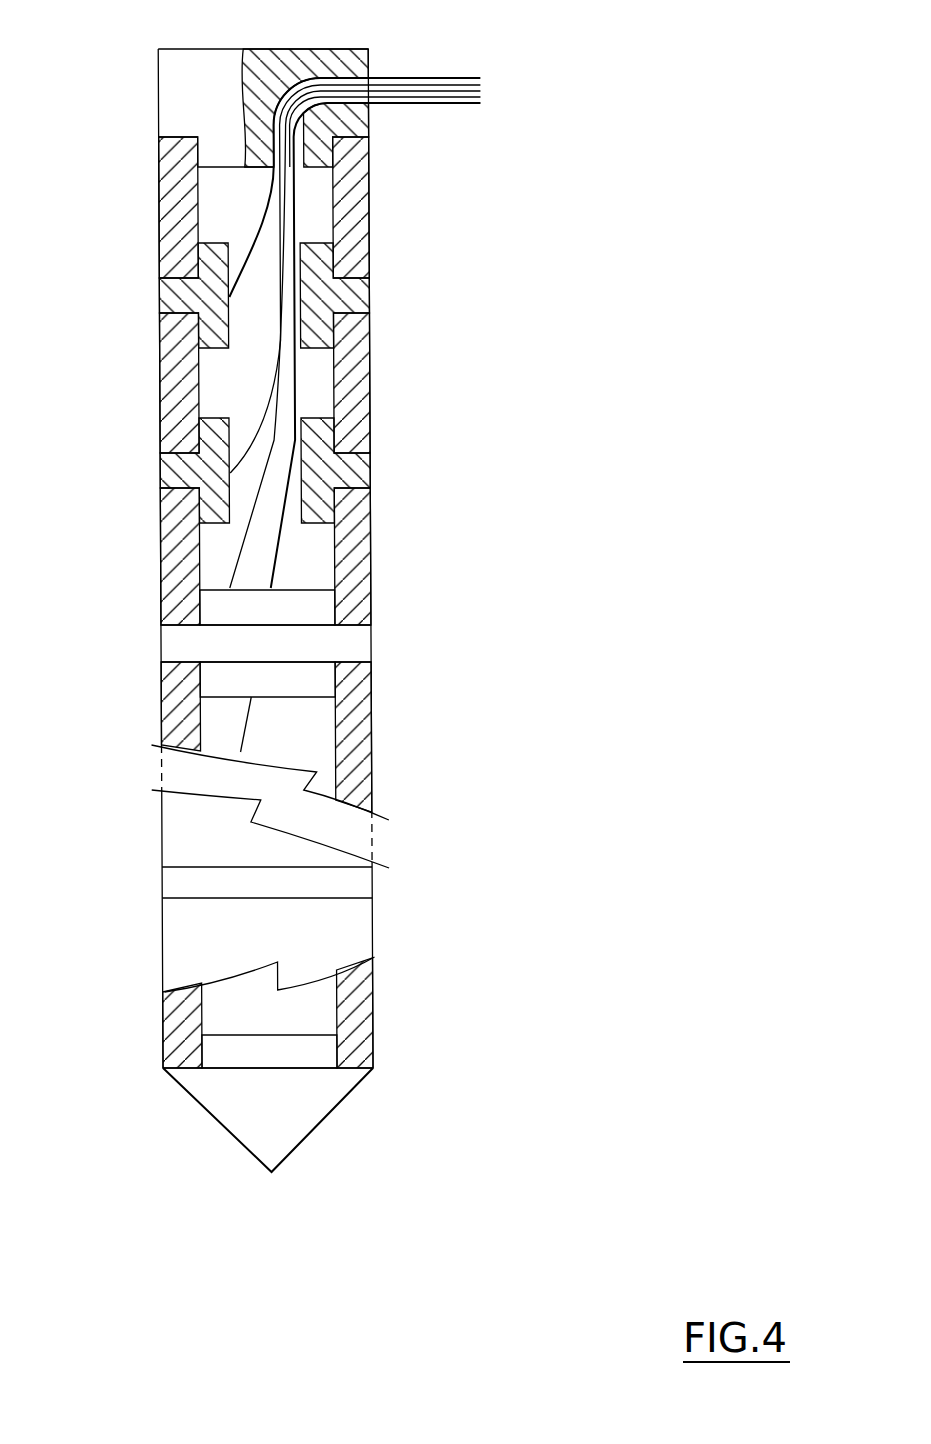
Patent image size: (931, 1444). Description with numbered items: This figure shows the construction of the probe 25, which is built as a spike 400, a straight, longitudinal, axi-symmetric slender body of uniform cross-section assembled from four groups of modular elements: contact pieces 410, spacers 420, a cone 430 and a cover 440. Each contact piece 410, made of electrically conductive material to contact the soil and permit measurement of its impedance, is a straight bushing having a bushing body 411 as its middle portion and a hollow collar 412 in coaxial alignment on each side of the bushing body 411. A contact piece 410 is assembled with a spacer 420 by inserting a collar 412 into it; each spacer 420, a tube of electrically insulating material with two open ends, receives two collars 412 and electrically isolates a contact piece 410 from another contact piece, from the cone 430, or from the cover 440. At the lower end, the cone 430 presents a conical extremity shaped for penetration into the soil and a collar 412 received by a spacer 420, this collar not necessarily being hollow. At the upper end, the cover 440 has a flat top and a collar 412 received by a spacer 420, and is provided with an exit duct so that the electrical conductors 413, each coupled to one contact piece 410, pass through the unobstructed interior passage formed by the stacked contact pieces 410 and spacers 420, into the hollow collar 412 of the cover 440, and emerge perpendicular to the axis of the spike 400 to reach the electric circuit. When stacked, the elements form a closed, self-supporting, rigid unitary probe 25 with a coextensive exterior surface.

The probe 25 is at (667, 139).
The spike 400 is at (669, 339).
The contact piece 410 is at (158, 292).
The bushing body 411 is at (360, 297).
The collar 412 is at (320, 145).
The electrical conductor 413 is at (448, 80).
The spacer 420 is at (158, 188).
The cone 430 is at (223, 1107).
The cover 440 is at (187, 60).